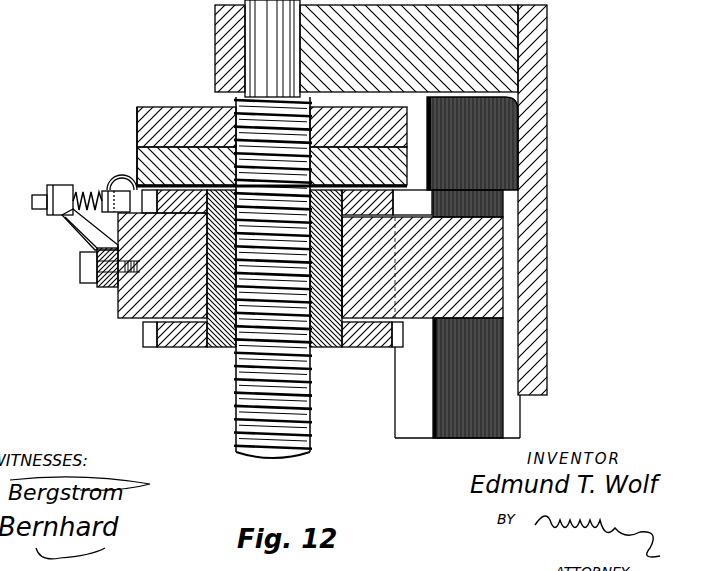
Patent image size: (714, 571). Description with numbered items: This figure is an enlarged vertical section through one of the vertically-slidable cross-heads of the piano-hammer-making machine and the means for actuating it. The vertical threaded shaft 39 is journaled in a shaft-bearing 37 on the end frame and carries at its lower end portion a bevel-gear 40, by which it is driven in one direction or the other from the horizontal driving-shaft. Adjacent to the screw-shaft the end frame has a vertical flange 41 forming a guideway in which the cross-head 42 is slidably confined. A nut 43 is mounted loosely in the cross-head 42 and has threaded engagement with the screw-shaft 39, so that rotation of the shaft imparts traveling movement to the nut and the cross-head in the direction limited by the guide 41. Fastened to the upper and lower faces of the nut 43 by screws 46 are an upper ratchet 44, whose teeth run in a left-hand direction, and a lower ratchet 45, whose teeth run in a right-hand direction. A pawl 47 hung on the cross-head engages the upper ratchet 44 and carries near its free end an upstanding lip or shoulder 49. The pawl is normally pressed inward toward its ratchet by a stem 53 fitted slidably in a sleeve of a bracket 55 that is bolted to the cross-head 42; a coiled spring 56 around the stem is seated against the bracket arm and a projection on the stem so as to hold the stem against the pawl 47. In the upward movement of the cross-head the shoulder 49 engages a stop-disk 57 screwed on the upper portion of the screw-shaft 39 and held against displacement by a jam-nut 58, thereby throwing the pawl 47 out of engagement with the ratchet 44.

The shaft-bearing 37 is at (547, 158).
The vertical threaded shaft 39 is at (272, 455).
The bevel-gear 40 is at (272, 166).
The vertical flange 41 is at (417, 420).
The cross-head 42 is at (130, 295).
The nut 43 is at (342, 297).
The upper ratchet 44 is at (157, 178).
The lower ratchet 45 is at (160, 345).
The screw 46 is at (348, 192).
The pawl 47 is at (116, 202).
The upstanding lip or shoulder 49 is at (113, 177).
The stem 53 is at (32, 203).
The bracket 55 is at (78, 232).
The coiled spring 56 is at (87, 190).
The stop-disk 57 is at (137, 147).
The jam-nut 58 is at (160, 115).